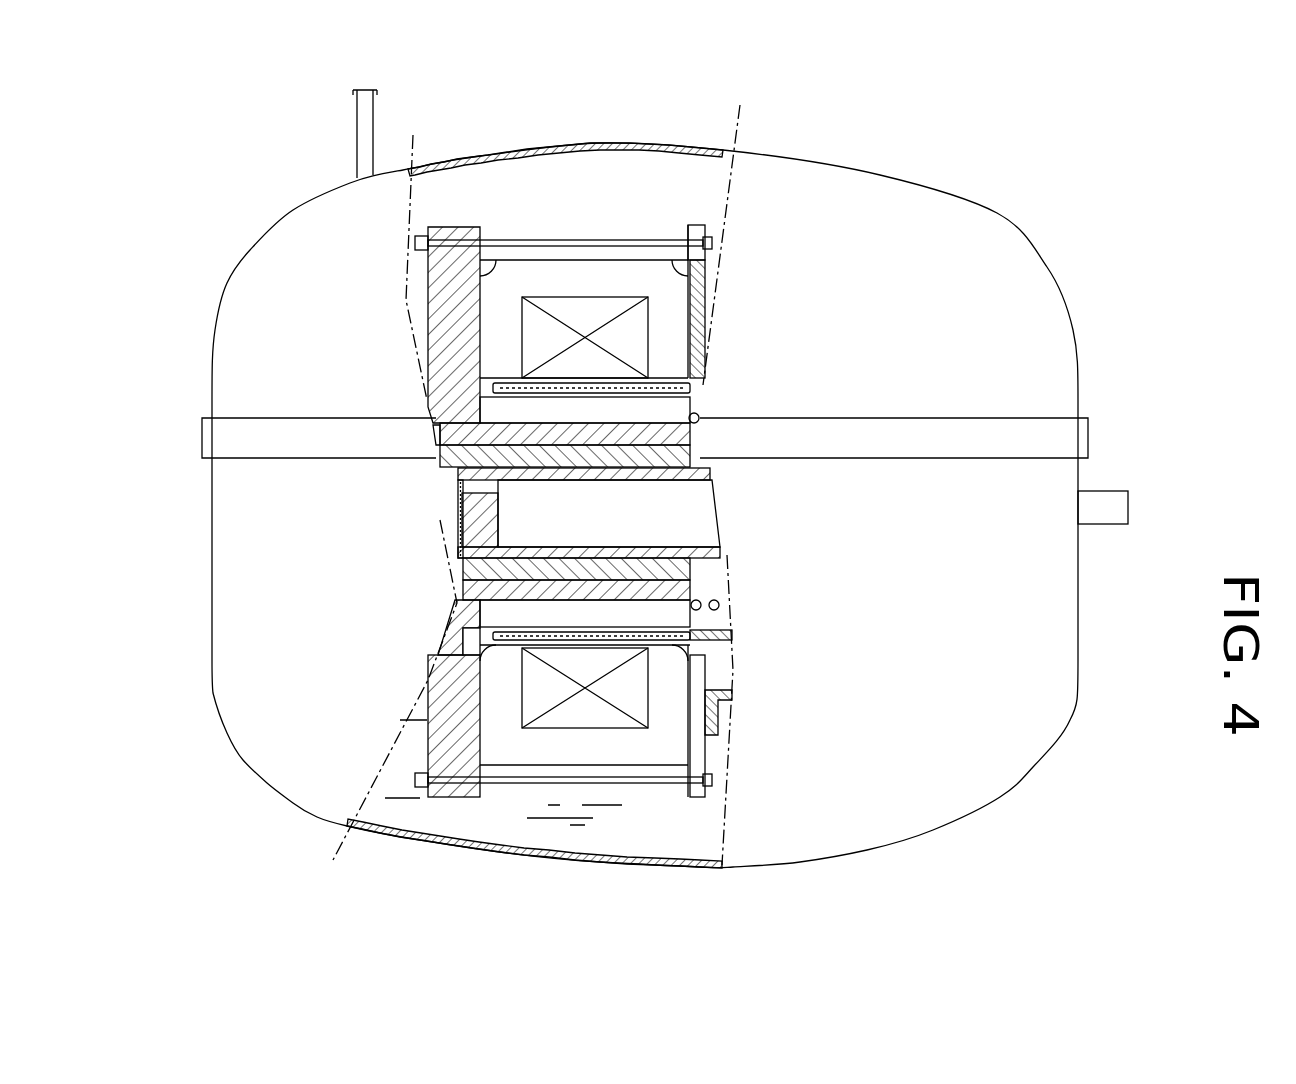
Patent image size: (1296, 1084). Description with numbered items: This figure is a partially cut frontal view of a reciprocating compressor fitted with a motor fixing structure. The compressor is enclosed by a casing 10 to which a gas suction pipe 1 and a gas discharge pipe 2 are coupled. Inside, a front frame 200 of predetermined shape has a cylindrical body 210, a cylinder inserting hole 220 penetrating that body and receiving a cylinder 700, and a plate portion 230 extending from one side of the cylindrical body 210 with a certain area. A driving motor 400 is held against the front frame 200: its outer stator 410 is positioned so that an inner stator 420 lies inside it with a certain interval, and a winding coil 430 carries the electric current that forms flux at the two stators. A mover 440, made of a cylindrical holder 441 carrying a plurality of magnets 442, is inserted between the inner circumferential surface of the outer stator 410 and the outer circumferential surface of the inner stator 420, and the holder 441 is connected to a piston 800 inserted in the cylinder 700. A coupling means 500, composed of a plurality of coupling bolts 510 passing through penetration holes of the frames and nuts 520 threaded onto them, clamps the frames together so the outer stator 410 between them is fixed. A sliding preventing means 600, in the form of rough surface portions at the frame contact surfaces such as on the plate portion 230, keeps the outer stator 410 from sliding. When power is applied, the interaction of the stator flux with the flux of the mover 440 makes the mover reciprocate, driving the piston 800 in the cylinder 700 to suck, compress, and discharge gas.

The gas suction pipe 1 is at (1115, 498).
The gas discharge pipe 2 is at (365, 110).
The casing 10 is at (1013, 282).
The front frame 200 is at (420, 272).
The cylindrical body 210 is at (705, 428).
The cylinder inserting hole 220 is at (437, 455).
The plate portion 230 is at (440, 307).
The driving motor 400 is at (603, 100).
The outer stator 410 is at (513, 372).
The inner stator 420 is at (630, 378).
The winding coil 430 is at (573, 307).
The mover 440 is at (528, 247).
The holder 441 is at (700, 370).
The magnets 442 is at (510, 387).
The coupling means 500 is at (510, 905).
The coupling bolts 510 is at (500, 785).
The nuts 520 is at (425, 797).
The sliding preventing means 600 is at (482, 248).
The cylinder 700 is at (468, 585).
The piston 800 is at (622, 560).